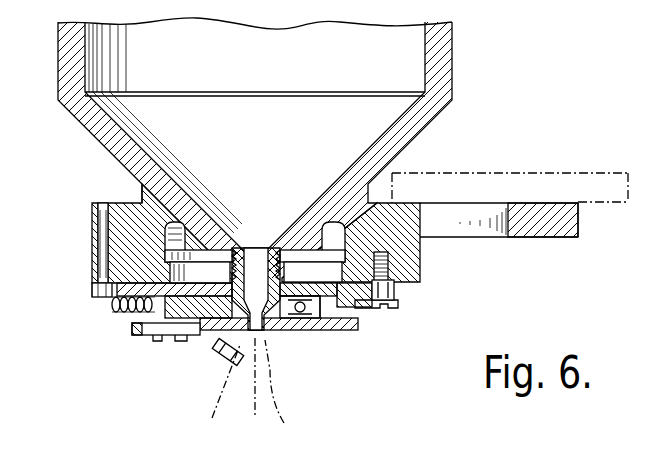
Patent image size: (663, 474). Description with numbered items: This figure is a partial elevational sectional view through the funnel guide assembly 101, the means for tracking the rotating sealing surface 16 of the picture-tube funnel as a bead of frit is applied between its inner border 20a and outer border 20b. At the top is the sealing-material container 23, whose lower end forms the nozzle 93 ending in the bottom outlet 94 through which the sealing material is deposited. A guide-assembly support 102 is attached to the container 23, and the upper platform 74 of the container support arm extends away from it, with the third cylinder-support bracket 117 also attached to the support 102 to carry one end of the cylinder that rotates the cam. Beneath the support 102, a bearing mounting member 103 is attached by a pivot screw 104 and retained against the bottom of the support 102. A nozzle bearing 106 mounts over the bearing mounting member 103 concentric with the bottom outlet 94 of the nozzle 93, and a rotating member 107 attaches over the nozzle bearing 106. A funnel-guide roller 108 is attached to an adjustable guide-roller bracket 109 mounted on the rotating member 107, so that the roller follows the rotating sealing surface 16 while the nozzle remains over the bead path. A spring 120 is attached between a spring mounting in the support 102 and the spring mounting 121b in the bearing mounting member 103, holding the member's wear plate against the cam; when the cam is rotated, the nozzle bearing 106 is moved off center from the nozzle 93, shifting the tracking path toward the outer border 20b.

The sealing-material container 23 is at (440, 60).
The upper platform 74 is at (586, 172).
The third cylinder-support bracket 117 is at (556, 228).
The guide-assembly support 102 is at (410, 263).
The pivot screw 104 is at (395, 306).
The bearing mounting member 103 is at (355, 310).
The rotating member 107 is at (353, 332).
The nozzle bearing 106 is at (318, 330).
The nozzle 93 is at (275, 328).
The bottom outlet 94 is at (283, 331).
The outer border 20b is at (293, 394).
The sealing surface 16 is at (256, 391).
The inner border 20a is at (216, 399).
The funnel-guide roller 108 is at (237, 358).
The adjustable guide-roller bracket 109 is at (200, 338).
The funnel guide assembly 101 is at (116, 337).
The spring 120 is at (125, 317).
The spring mounting 121b is at (97, 297).